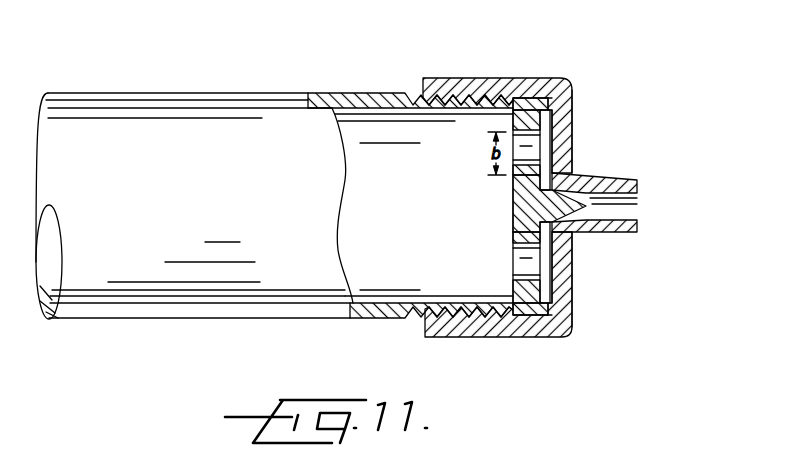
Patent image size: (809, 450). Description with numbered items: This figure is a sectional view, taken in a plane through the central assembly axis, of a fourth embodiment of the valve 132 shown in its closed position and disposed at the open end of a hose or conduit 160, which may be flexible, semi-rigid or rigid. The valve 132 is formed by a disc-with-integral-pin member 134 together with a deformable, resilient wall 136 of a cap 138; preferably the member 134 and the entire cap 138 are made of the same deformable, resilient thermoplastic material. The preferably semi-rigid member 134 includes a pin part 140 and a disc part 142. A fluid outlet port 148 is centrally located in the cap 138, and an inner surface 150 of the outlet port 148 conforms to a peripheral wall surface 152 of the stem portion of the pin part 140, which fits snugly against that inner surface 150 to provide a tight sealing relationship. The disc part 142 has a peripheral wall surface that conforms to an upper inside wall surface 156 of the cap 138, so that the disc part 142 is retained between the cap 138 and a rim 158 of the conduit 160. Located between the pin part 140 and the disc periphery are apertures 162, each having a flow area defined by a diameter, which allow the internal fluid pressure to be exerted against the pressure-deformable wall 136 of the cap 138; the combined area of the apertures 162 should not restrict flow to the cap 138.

The valve 132 is at (570, 194).
The disc-with-integral-pin member 134 is at (510, 238).
The deformable, resilient wall 136 is at (565, 128).
The cap 138 is at (458, 76).
The pin part 140 is at (578, 223).
The disc part 142 is at (548, 287).
The fluid outlet port 148 is at (645, 198).
The inner surface 150 is at (556, 190).
The peripheral wall surface 152 is at (540, 213).
The upper inside wall surface 156 is at (542, 97).
The rim 158 is at (517, 96).
The hose or conduit 160 is at (330, 90).
The apertures 162 is at (523, 166).